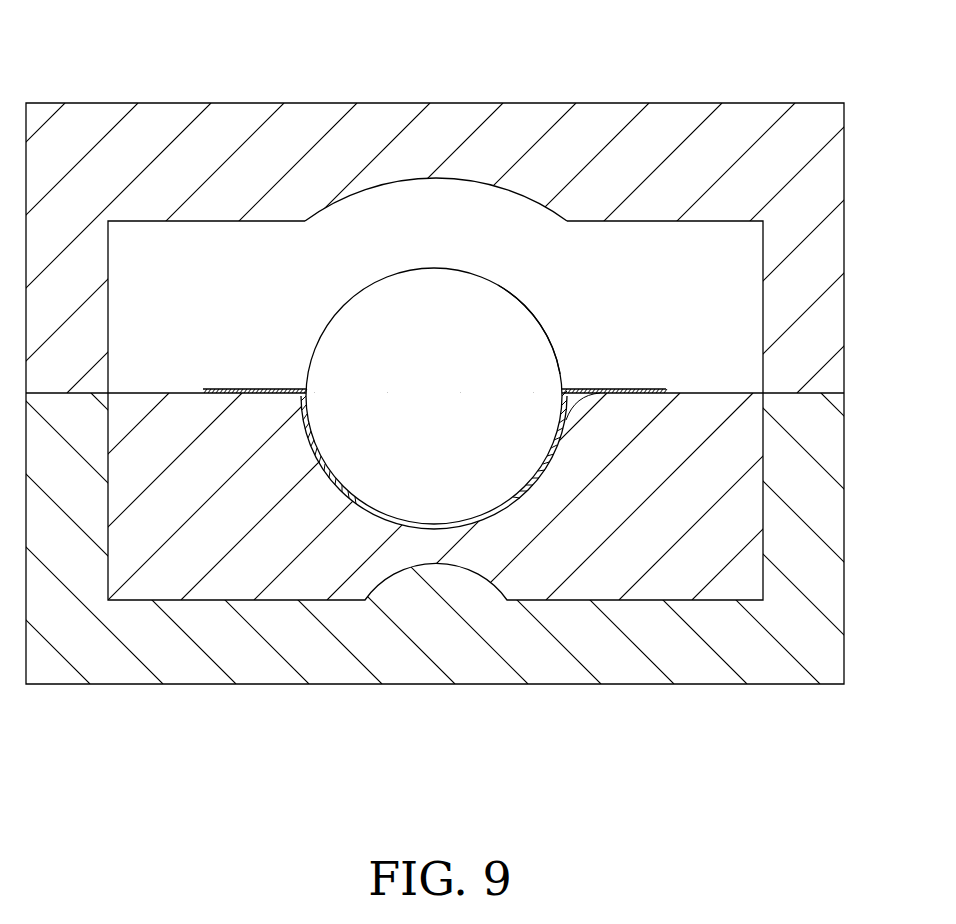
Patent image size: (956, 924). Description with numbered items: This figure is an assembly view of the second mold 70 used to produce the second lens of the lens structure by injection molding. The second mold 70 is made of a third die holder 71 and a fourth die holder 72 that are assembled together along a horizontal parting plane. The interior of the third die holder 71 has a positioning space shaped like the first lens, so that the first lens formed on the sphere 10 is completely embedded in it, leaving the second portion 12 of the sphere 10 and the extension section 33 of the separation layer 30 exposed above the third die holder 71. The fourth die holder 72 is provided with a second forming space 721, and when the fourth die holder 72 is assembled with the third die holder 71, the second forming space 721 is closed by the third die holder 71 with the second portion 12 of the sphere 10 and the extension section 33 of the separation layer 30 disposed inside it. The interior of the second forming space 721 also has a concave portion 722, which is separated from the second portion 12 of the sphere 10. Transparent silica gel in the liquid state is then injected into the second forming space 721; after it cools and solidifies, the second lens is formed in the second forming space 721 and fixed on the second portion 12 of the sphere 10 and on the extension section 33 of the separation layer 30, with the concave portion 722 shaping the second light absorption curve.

The second mold 70 is at (478, 412).
The third die holder 71 is at (686, 658).
The fourth die holder 72 is at (478, 203).
The second forming space 721 is at (200, 262).
The concave portion 722 is at (400, 178).
The sphere 10 is at (333, 358).
The second portion 12 is at (540, 318).
The separation layer 30 is at (568, 405).
The extension section 33 is at (228, 390).